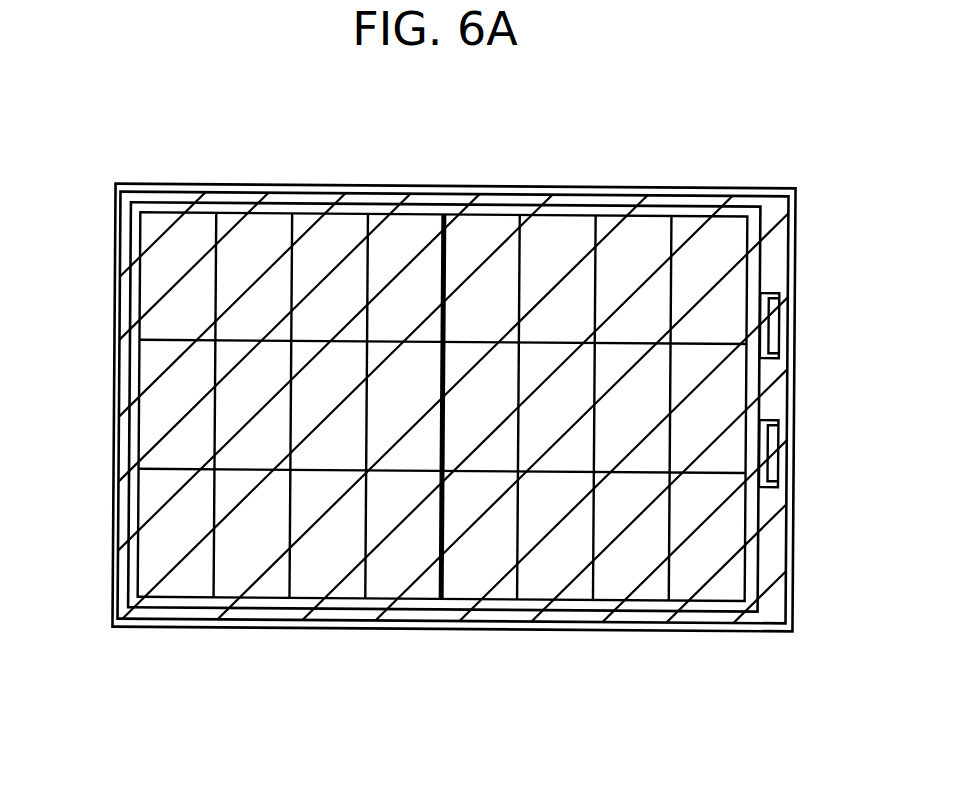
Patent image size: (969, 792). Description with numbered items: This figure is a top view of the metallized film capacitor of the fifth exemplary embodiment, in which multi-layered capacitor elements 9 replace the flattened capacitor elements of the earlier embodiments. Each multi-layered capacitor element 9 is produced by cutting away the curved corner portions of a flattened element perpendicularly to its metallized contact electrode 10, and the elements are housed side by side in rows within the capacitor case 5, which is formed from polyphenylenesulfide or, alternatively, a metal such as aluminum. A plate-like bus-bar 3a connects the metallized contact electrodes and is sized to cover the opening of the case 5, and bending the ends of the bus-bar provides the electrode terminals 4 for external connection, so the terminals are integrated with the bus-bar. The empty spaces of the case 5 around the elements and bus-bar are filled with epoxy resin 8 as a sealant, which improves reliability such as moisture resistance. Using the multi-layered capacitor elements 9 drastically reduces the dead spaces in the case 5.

The bus-bar 3a is at (523, 204).
The electrode terminal 4 is at (780, 347).
The capacitor case 5 is at (302, 186).
The epoxy resin 8 is at (412, 194).
The multi-layered capacitor element 9 is at (140, 236).
The metallized contact electrode 10 is at (162, 557).